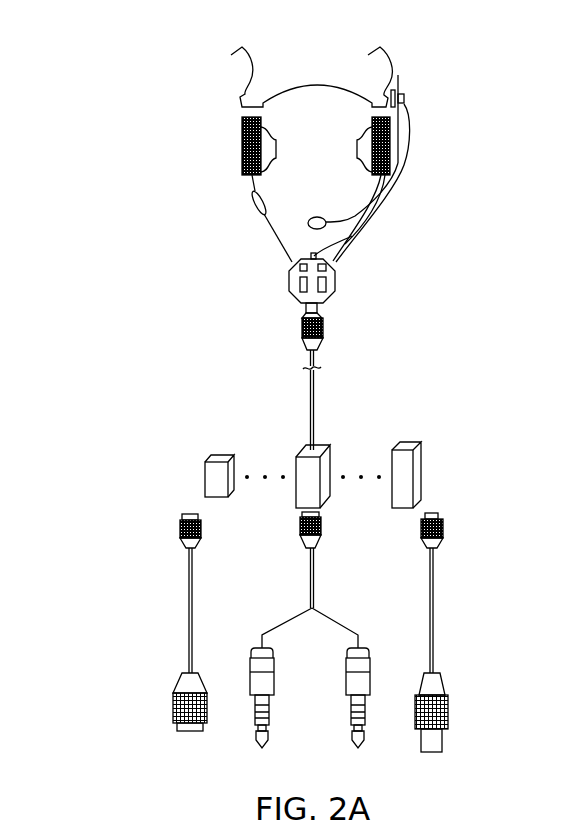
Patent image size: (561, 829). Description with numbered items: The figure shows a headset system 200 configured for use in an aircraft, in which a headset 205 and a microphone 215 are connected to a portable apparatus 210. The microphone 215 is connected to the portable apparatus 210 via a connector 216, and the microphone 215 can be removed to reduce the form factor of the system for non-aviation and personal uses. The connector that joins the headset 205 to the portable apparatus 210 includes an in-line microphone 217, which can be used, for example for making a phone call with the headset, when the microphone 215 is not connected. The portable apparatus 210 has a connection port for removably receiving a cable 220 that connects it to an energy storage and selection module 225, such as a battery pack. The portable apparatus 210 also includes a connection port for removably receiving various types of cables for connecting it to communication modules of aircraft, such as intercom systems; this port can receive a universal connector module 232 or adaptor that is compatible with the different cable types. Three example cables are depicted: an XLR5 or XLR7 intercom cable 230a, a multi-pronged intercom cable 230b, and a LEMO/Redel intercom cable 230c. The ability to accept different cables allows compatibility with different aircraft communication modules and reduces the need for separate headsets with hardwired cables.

The headset system 200 is at (121, 54).
The headset 205 is at (243, 135).
The portable apparatus 210 is at (338, 281).
The microphone 215 is at (400, 125).
The connector 216 is at (410, 137).
The in-line microphone 217 is at (256, 205).
The cable 220 is at (310, 405).
The energy storage and selection module 225 is at (216, 453).
The intercom cable 230a is at (188, 600).
The multi-pronged cable 230b is at (308, 605).
The LEMO/Redel intercom cable 230c is at (436, 612).
The universal connector module 232 is at (200, 527).